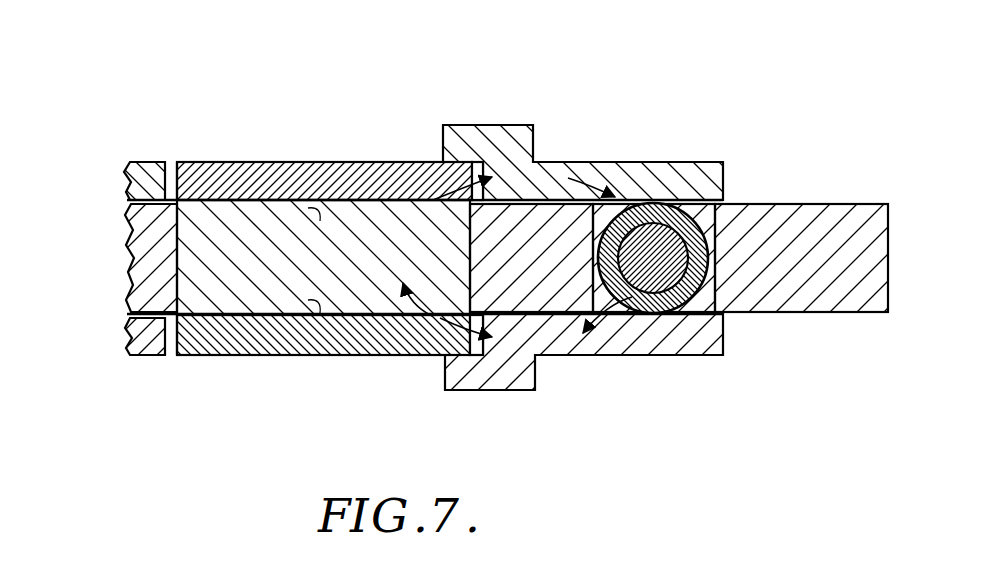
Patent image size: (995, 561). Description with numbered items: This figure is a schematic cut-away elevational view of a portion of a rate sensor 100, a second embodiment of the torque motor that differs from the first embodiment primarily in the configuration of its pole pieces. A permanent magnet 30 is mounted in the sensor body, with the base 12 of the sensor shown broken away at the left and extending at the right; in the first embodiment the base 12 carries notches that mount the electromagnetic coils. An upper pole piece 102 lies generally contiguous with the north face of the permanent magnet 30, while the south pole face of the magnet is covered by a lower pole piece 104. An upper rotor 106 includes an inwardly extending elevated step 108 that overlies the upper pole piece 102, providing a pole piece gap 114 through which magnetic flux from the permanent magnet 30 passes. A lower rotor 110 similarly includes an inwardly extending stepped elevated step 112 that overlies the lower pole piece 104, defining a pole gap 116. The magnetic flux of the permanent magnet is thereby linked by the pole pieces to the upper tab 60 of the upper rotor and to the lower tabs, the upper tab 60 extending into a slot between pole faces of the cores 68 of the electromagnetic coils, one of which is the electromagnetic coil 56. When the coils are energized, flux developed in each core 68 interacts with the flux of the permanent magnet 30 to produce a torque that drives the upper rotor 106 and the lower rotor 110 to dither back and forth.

The base 12 is at (137, 273).
The permanent magnet 30 is at (250, 162).
The electromagnetic coil 56 is at (688, 308).
The upper tab 60 is at (709, 215).
The core 68 is at (650, 236).
The rate sensor 100 is at (469, 272).
The upper pole piece 102 is at (312, 162).
The lower pole piece 104 is at (260, 358).
The upper rotor 106 is at (392, 129).
The elevated step 108 is at (507, 125).
The lower rotor 110 is at (390, 380).
The stepped elevated step 112 is at (477, 392).
The pole piece gap 114 is at (447, 160).
The pole gap 116 is at (430, 357).